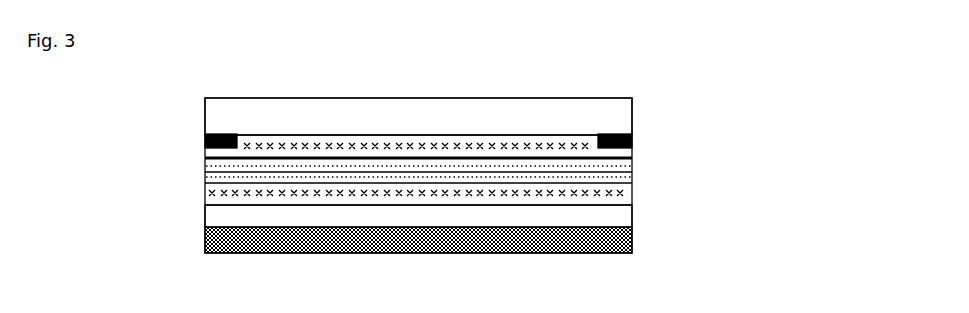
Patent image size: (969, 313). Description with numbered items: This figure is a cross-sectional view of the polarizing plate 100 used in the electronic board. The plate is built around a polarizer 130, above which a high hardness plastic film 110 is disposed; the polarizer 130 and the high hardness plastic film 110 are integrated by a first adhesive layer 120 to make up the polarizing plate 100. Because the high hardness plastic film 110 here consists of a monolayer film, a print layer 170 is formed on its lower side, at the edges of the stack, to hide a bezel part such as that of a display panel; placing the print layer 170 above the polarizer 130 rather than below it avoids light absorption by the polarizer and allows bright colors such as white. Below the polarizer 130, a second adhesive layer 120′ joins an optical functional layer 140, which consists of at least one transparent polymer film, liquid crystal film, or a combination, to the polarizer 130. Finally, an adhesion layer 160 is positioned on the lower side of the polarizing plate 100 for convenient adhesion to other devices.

The polarizing plate 100 is at (795, 75).
The high hardness plastic film 110 is at (490, 108).
The first adhesive layer 120 is at (490, 135).
The polarizer 130 is at (490, 159).
The second adhesive layer 120′ is at (491, 182).
The optical functional layer 140 is at (490, 205).
The adhesion layer 160 is at (495, 248).
The print layer 170 is at (373, 148).